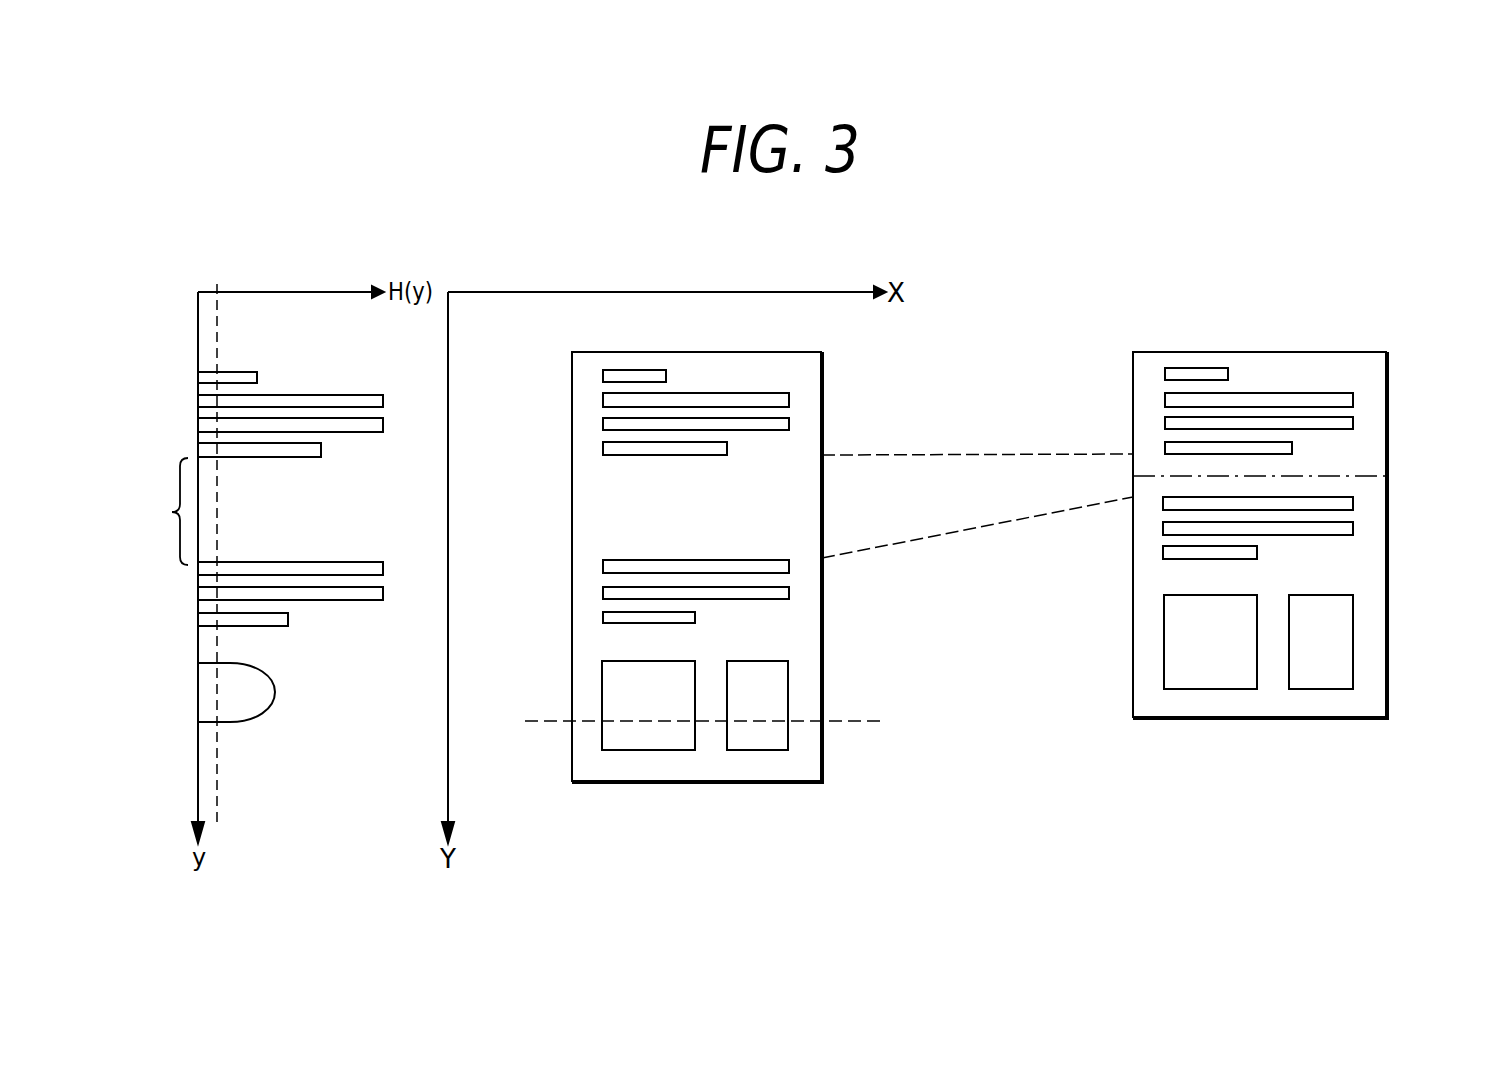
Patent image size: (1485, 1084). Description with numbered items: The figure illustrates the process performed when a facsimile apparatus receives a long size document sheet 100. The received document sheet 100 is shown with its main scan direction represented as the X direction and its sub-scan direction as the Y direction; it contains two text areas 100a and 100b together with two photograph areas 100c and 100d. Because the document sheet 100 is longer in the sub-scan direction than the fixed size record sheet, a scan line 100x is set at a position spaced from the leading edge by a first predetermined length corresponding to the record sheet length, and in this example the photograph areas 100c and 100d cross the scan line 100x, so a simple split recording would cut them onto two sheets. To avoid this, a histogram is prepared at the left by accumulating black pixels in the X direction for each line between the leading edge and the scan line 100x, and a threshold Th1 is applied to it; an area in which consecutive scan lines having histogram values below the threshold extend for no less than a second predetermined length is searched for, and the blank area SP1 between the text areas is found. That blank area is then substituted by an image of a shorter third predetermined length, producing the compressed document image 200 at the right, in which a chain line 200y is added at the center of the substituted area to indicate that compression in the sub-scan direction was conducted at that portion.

The document sheet 100 is at (671, 539).
The text area 100a is at (565, 363).
The text area 100b is at (565, 552).
The photograph area 100c is at (652, 740).
The photograph area 100d is at (763, 740).
The scan line 100x is at (673, 722).
The document sheet image with chain line 200 is at (1308, 499).
The chain line 200y is at (1360, 477).
The blank area SP1 is at (154, 511).
The predetermined threshold Th1 is at (217, 540).